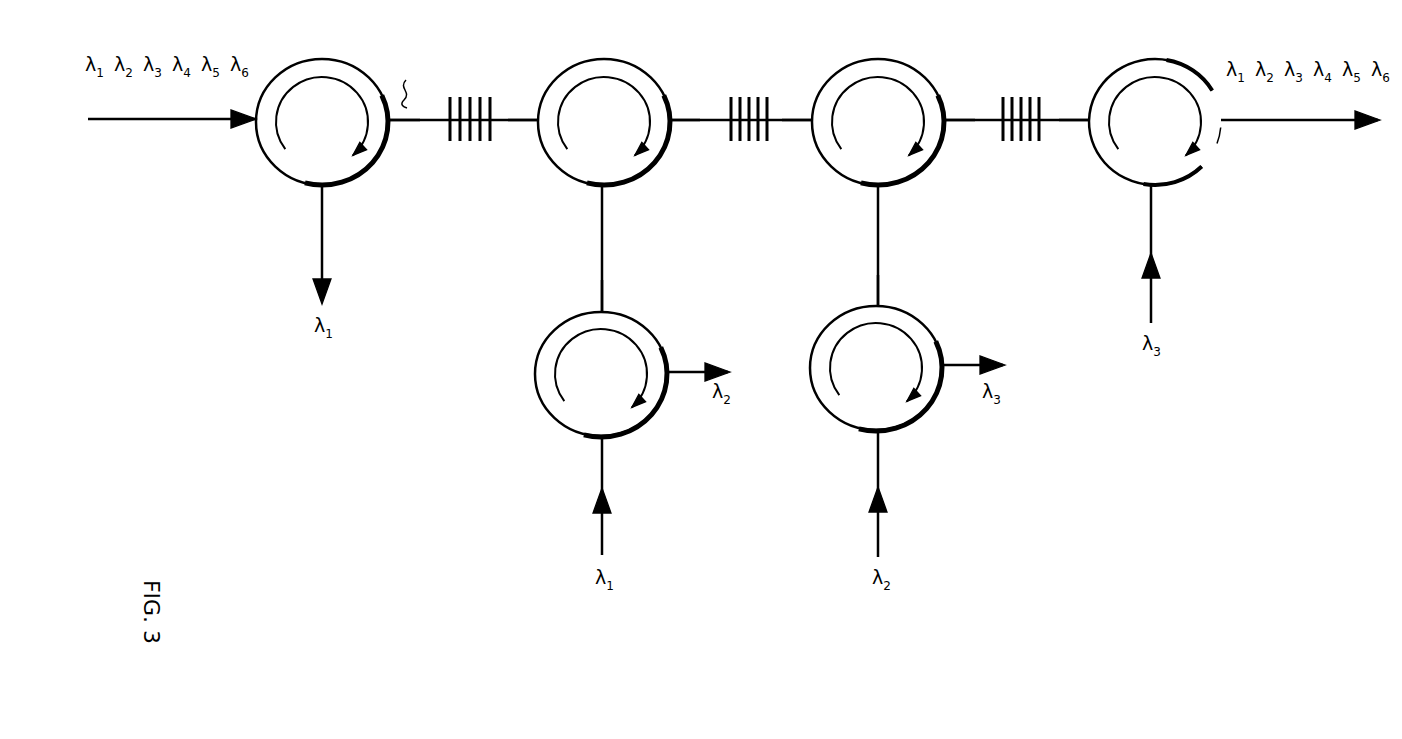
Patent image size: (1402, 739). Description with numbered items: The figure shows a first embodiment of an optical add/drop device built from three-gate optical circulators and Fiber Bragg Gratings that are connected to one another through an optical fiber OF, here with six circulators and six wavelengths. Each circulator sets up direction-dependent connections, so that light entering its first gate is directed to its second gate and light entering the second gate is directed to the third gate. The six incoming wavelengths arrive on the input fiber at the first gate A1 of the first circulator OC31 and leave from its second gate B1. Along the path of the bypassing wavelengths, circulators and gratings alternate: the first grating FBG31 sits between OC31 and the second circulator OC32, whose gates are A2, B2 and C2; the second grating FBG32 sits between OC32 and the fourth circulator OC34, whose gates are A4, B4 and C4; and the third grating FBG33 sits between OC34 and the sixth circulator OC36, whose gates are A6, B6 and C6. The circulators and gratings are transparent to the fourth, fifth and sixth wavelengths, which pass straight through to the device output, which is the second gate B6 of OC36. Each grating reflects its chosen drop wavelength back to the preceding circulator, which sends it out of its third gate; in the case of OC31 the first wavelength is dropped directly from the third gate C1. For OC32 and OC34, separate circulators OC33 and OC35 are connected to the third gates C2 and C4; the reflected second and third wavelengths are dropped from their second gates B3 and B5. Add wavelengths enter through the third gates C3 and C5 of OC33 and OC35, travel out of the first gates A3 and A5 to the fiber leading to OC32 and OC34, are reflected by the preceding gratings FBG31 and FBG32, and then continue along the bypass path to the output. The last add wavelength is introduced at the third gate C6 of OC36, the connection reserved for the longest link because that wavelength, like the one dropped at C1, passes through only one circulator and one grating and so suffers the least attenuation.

The first optical circulator OC31 is at (322, 97).
The second optical circulator OC32 is at (604, 94).
The third optical circulator OC33 is at (569, 374).
The fourth optical circulator OC34 is at (878, 94).
The fifth optical circulator OC35 is at (847, 367).
The sixth optical circulator OC36 is at (1155, 93).
The Fiber Bragg Grating (λ1) FBG31 is at (492, 102).
The Fiber Bragg Grating (λ2) FBG32 is at (752, 99).
The Fiber Bragg Grating (λ3) FBG33 is at (1030, 98).
The optical fiber OF is at (463, 86).
The first gate of first circulator A1 is at (172, 134).
The second gate of first circulator B1 is at (407, 138).
The third gate of first circulator C1 is at (336, 244).
The first gate of second circulator A2 is at (523, 141).
The second gate of second circulator B2 is at (687, 138).
The third gate of second circulator C2 is at (621, 248).
The first gate of third circulator A3 is at (585, 292).
The second gate of third circulator B3 is at (698, 358).
The third gate of third circulator C3 is at (617, 495).
The first gate of fourth circulator A4 is at (797, 138).
The second gate of fourth circulator B4 is at (964, 137).
The third gate of fourth circulator C4 is at (897, 245).
The first gate of fifth circulator A5 is at (861, 285).
The second gate of fifth circulator B5 is at (973, 348).
The third gate of fifth circulator C5 is at (893, 493).
The first gate of sixth circulator A6 is at (1074, 137).
The second gate of sixth circulator B6 is at (1300, 133).
The third gate of sixth circulator C6 is at (1165, 254).